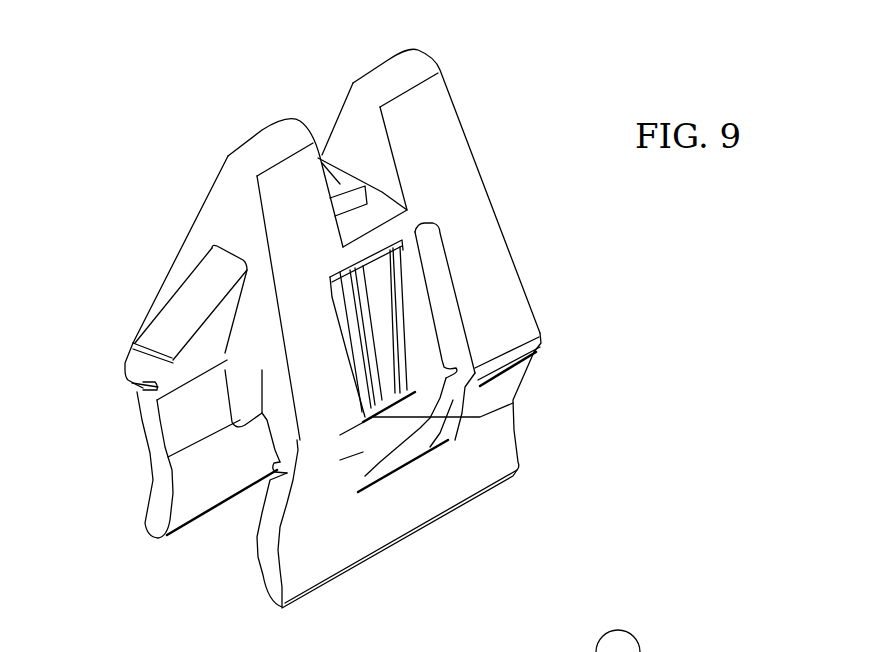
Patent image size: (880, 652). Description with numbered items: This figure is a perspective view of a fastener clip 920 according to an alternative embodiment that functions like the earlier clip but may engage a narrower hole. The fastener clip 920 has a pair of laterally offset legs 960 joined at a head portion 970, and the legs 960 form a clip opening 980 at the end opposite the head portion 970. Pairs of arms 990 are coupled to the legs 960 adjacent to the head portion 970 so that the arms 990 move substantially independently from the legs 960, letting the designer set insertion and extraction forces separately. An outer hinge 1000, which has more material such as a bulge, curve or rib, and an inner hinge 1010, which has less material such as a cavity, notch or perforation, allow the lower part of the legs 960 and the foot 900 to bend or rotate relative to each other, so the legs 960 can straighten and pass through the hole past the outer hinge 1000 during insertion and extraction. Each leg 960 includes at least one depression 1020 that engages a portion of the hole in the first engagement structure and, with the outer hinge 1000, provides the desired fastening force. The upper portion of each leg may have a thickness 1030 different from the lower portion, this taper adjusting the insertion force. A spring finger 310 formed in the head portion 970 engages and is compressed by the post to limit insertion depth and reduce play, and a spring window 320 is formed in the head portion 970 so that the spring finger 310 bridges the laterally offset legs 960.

The spring finger 310 is at (335, 178).
The spring window 320 is at (302, 102).
The foot 900 is at (187, 503).
The fastener clip 920 is at (515, 155).
The legs 960 is at (270, 345).
The head portion 970 is at (450, 58).
The clip opening 980 is at (205, 567).
The arms 990 is at (373, 388).
The outer hinge 1000 is at (541, 337).
The inner hinge 1010 is at (456, 366).
The depression 1020 is at (318, 502).
The thickness D1 1030 is at (330, 398).